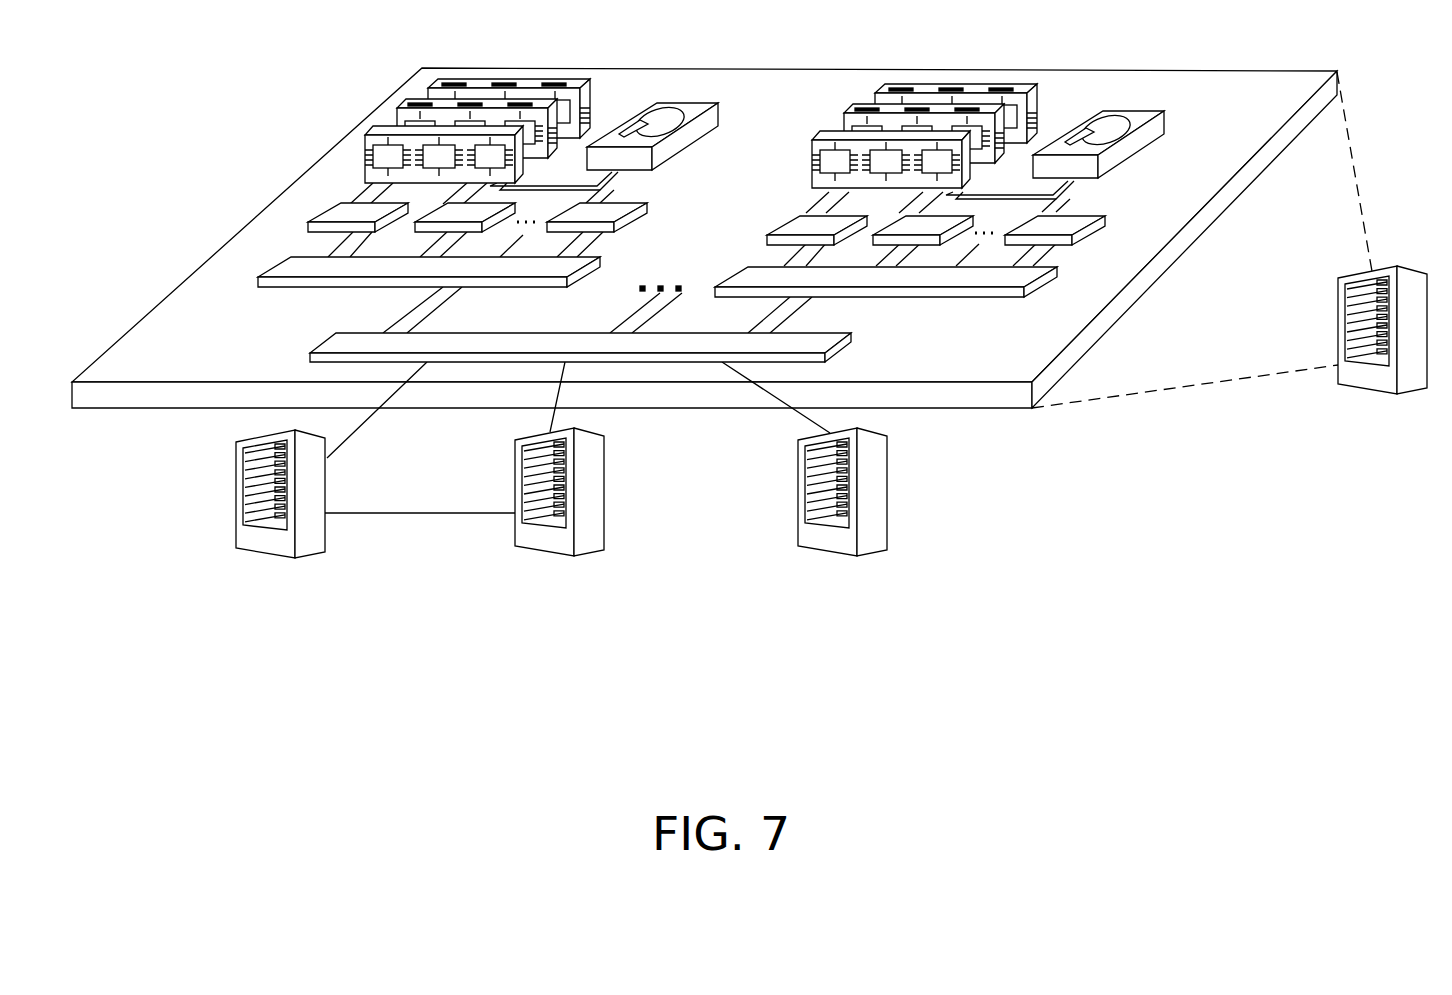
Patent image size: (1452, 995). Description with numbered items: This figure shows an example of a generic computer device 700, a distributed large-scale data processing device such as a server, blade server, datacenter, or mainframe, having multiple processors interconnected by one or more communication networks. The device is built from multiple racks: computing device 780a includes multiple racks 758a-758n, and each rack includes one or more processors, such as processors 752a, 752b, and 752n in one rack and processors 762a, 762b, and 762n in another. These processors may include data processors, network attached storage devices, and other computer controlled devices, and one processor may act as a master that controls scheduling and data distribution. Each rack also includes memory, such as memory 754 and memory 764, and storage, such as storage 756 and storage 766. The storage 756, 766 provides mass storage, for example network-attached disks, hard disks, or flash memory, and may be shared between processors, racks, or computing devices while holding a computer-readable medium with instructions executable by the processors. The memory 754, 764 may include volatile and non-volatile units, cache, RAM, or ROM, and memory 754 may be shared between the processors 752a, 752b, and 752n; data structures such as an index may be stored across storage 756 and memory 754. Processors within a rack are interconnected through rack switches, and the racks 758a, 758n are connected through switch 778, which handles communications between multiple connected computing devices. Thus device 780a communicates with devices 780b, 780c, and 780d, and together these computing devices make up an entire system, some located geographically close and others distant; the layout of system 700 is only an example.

The generic computer device 700 is at (244, 84).
The processor 752a is at (353, 212).
The processor 752b is at (450, 213).
The processor 752n is at (608, 213).
The memory 754 is at (515, 83).
The storage 756 is at (681, 103).
The rack 758a is at (297, 267).
The rack 758n is at (1008, 277).
The processor 762a is at (815, 225).
The processor 762b is at (913, 228).
The processor 762n is at (1058, 225).
The memory 764 is at (961, 92).
The storage 766 is at (1127, 112).
The switch 778 is at (340, 345).
The computing device 780a is at (1337, 308).
The computing device 780b is at (236, 495).
The computing device 780c is at (516, 488).
The computing device 780d is at (798, 495).